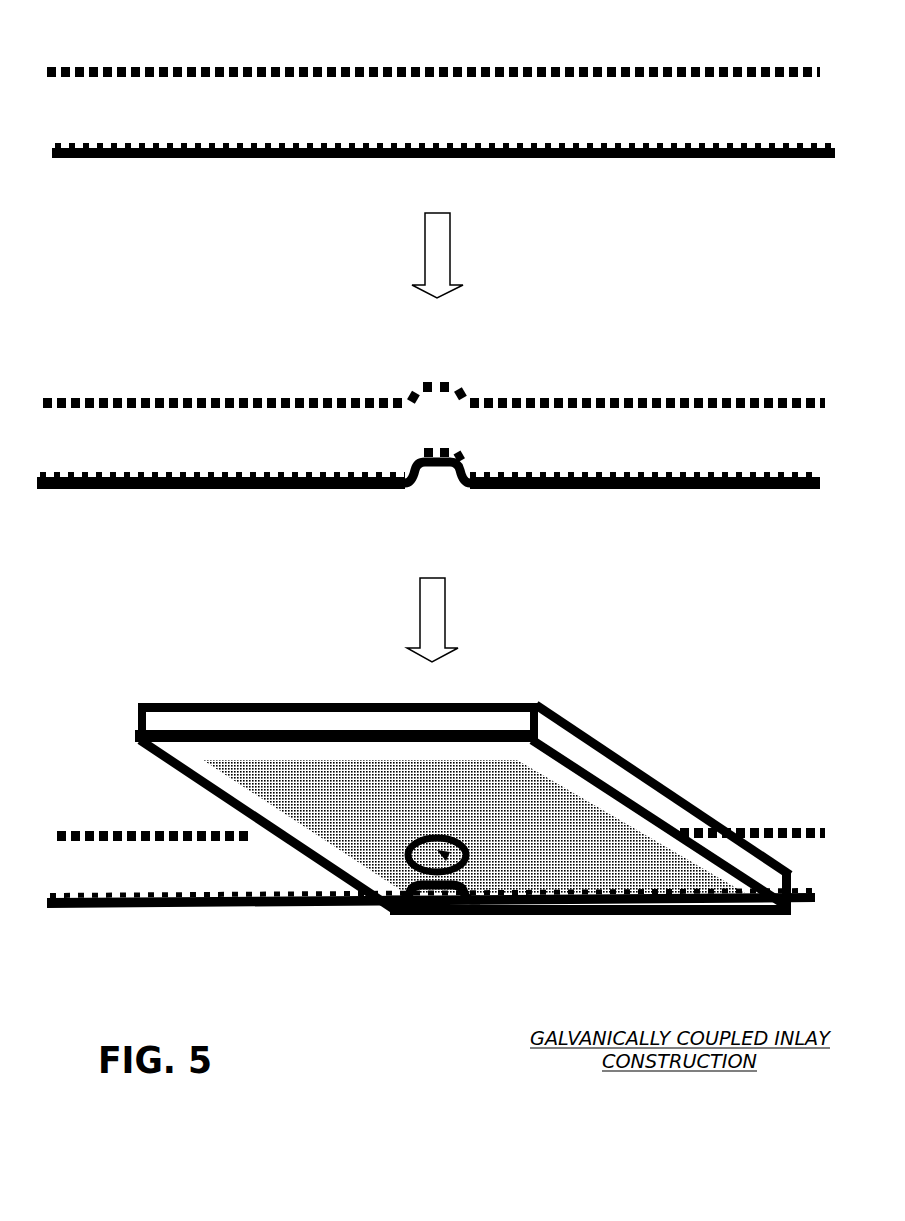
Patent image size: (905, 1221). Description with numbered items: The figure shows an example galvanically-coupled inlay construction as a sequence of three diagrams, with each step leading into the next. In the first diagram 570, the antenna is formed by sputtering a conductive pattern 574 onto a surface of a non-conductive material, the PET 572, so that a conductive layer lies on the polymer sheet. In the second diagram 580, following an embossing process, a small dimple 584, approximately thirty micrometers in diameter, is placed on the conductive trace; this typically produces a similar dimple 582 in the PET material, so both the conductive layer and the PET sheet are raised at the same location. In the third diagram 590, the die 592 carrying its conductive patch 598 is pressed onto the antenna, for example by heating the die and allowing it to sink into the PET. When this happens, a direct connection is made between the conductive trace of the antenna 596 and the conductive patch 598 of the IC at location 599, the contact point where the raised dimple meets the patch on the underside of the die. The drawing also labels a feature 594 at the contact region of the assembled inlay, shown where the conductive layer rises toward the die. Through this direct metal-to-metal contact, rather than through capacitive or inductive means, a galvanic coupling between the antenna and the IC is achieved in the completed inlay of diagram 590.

The diagram 570 is at (97, 41).
The PET 572 is at (264, 110).
The conductive pattern 574 is at (263, 168).
The diagram 580 is at (97, 355).
The dimple on the PET material 582 is at (475, 382).
The small dimple 584 is at (431, 490).
The diagram 590 is at (113, 670).
The die 592 is at (555, 730).
The galvanic contact bump 594 is at (428, 906).
The antenna 596 is at (108, 912).
The conductive patch 598 is at (584, 812).
The location 599 is at (474, 826).